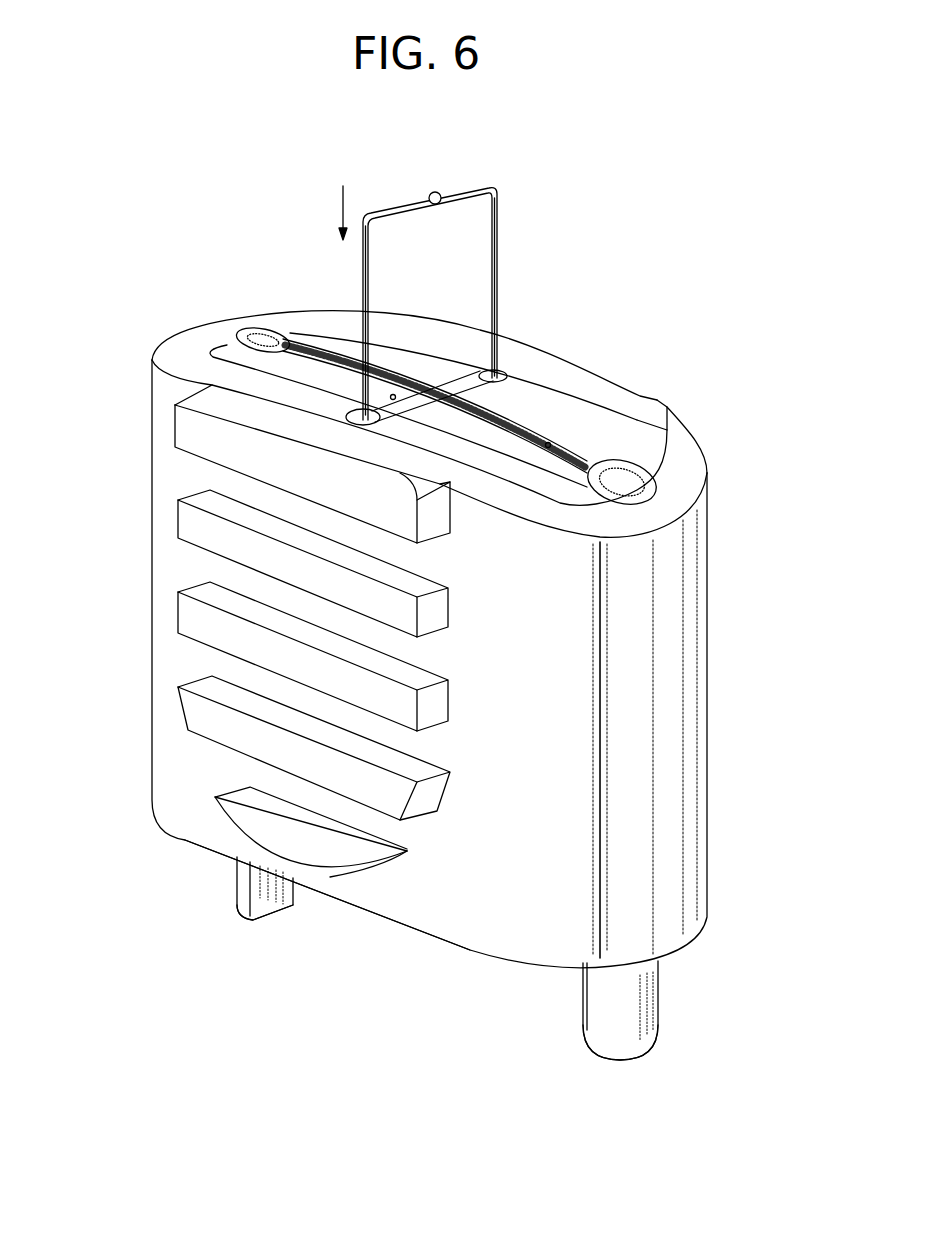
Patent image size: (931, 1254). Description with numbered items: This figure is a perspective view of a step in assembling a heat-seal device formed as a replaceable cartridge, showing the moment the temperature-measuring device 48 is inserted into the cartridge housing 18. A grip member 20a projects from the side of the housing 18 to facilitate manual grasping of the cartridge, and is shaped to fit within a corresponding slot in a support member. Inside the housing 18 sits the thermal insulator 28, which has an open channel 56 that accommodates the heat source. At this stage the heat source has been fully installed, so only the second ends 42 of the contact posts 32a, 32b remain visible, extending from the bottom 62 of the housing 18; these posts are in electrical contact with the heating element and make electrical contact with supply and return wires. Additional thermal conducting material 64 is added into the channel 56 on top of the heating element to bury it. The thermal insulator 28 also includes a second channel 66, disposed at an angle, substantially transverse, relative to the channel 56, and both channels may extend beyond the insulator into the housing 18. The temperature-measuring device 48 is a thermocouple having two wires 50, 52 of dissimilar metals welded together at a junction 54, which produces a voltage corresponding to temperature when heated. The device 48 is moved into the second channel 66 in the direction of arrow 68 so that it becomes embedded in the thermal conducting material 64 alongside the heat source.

The cartridge housing 18 is at (693, 594).
The grip member 20a is at (190, 525).
The thermal insulator 28 is at (590, 433).
The contact post 32a is at (648, 1006).
The contact post 32b is at (237, 886).
The second end of contact post 42 is at (265, 905).
The temperature-measuring device 48 is at (475, 186).
The thermocouple wire 50 is at (362, 264).
The thermocouple wire 52 is at (499, 253).
The junction 54 is at (433, 192).
The open channel 56 is at (510, 417).
The bottom of housing 62 is at (395, 920).
The thermal conducting material 64 is at (448, 387).
The second channel 66 is at (467, 372).
The arrow 68 is at (338, 201).